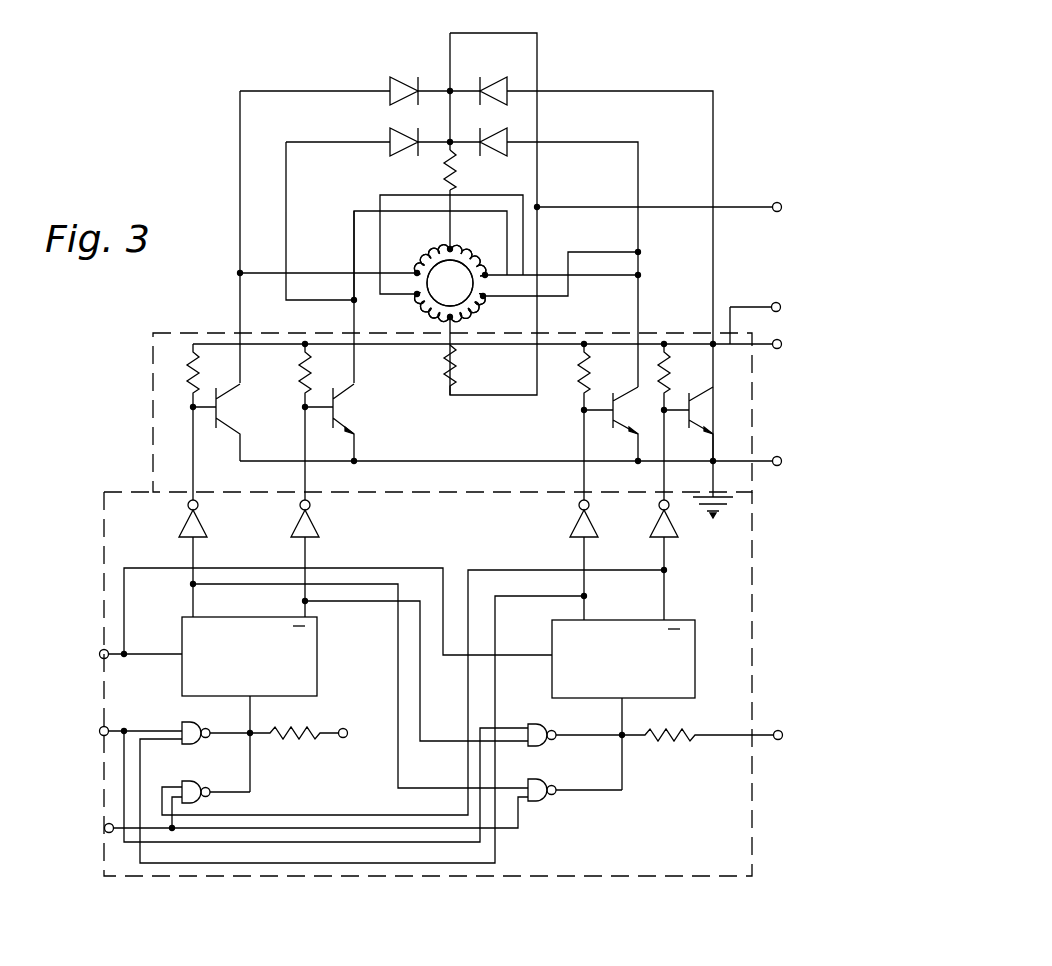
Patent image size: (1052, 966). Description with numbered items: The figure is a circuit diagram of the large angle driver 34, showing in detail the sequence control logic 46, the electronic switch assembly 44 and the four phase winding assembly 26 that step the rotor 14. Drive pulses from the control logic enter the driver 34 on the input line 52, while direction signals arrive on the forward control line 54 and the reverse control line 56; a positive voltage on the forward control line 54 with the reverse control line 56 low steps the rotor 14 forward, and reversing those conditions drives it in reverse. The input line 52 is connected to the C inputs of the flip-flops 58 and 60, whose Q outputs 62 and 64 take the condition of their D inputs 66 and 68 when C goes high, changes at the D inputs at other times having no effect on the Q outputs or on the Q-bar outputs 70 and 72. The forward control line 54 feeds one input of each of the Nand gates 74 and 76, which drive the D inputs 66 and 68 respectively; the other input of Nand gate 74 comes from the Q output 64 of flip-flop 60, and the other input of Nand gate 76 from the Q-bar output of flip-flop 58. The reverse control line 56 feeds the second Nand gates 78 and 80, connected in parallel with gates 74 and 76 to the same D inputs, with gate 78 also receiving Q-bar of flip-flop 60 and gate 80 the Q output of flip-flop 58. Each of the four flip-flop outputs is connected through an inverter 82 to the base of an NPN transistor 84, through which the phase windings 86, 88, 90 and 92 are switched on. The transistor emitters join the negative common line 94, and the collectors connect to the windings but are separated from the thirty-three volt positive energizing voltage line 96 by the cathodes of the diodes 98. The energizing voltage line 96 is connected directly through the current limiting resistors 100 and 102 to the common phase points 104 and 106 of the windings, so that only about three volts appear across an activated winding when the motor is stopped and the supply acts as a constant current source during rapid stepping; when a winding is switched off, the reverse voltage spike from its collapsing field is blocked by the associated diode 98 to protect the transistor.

The rotor 14 is at (460, 292).
The four phase winding assembly 26 is at (408, 304).
The driver 34 is at (760, 62).
The electronic switch assembly 44 is at (150, 394).
The sequence control logic 46 is at (101, 566).
The input line 52 is at (117, 648).
The forward control line 54 is at (113, 727).
The reverse control line 56 is at (117, 823).
The flip-flop 58 is at (259, 665).
The flip-flop 60 is at (628, 668).
The Q output 62 is at (194, 603).
The Q output 64 is at (586, 608).
The D input 66 is at (253, 706).
The D input 68 is at (624, 712).
The Q-bar output 70 is at (342, 604).
The Q-bar output 72 is at (668, 608).
The Nand gate 74 is at (196, 735).
The Nand gate 76 is at (538, 734).
The second Nand gate 78 is at (200, 800).
The second Nand gate 80 is at (544, 795).
The inverter 82 is at (200, 524).
The NPN transistor 84 is at (227, 434).
The phase winding 86 is at (428, 262).
The phase winding 88 is at (433, 321).
The phase winding 90 is at (489, 262).
The phase winding 92 is at (488, 302).
The negative common line 94 is at (761, 461).
The positive energizing voltage line 96 is at (767, 184).
The diode 98 is at (401, 79).
The current limiting resistor 100 is at (448, 174).
The current limiting resistor 102 is at (446, 357).
The common phase point 104 is at (452, 243).
The common phase point 106 is at (451, 327).